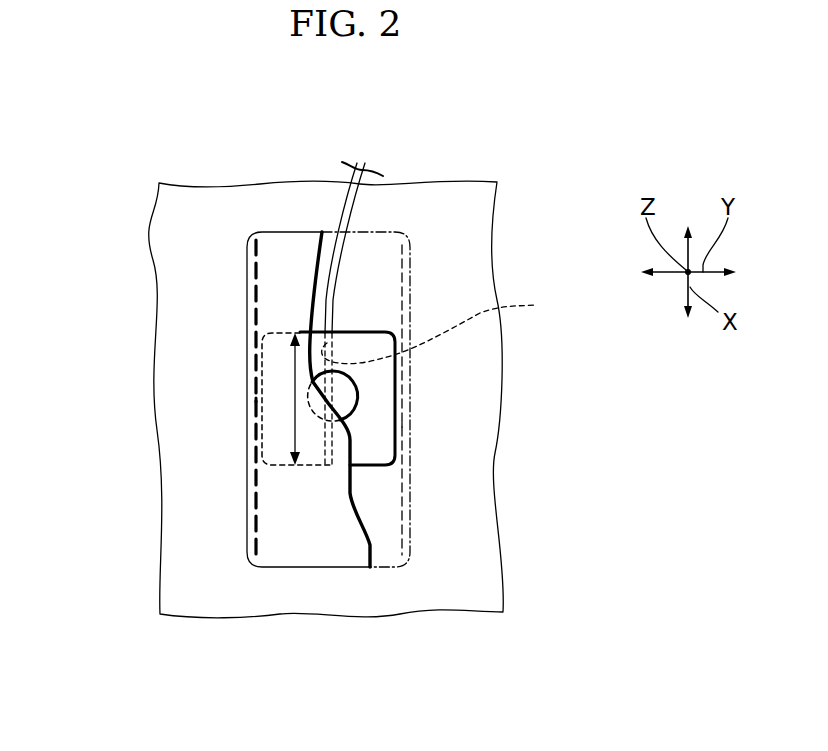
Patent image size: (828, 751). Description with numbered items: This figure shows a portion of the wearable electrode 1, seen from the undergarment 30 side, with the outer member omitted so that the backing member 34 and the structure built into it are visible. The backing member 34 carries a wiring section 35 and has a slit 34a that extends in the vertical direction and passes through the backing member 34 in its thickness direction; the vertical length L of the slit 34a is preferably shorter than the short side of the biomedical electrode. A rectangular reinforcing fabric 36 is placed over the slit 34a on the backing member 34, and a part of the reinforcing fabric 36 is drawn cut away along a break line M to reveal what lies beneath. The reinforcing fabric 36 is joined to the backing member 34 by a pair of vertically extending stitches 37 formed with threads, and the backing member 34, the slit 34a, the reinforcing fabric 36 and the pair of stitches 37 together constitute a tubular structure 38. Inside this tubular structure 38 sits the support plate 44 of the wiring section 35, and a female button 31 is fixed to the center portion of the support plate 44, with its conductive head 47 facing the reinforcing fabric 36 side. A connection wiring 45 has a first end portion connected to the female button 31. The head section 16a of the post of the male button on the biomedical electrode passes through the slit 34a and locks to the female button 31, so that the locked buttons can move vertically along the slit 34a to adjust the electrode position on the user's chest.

The wearable electrode 1 is at (138, 152).
The undergarment 30 is at (514, 160).
The backing member 34 is at (187, 257).
The wiring section 35 is at (352, 311).
The reinforcing fabric 36 is at (287, 250).
The stitches 37 is at (256, 400).
The tubular structure 38 is at (240, 538).
The support plate 44 is at (370, 343).
The connection wiring 45 is at (363, 163).
The head 47 is at (441, 403).
The female button 31 is at (343, 407).
The head section 16a is at (330, 399).
The slit 34a is at (455, 327).
The break line M is at (373, 532).
The length L is at (287, 399).